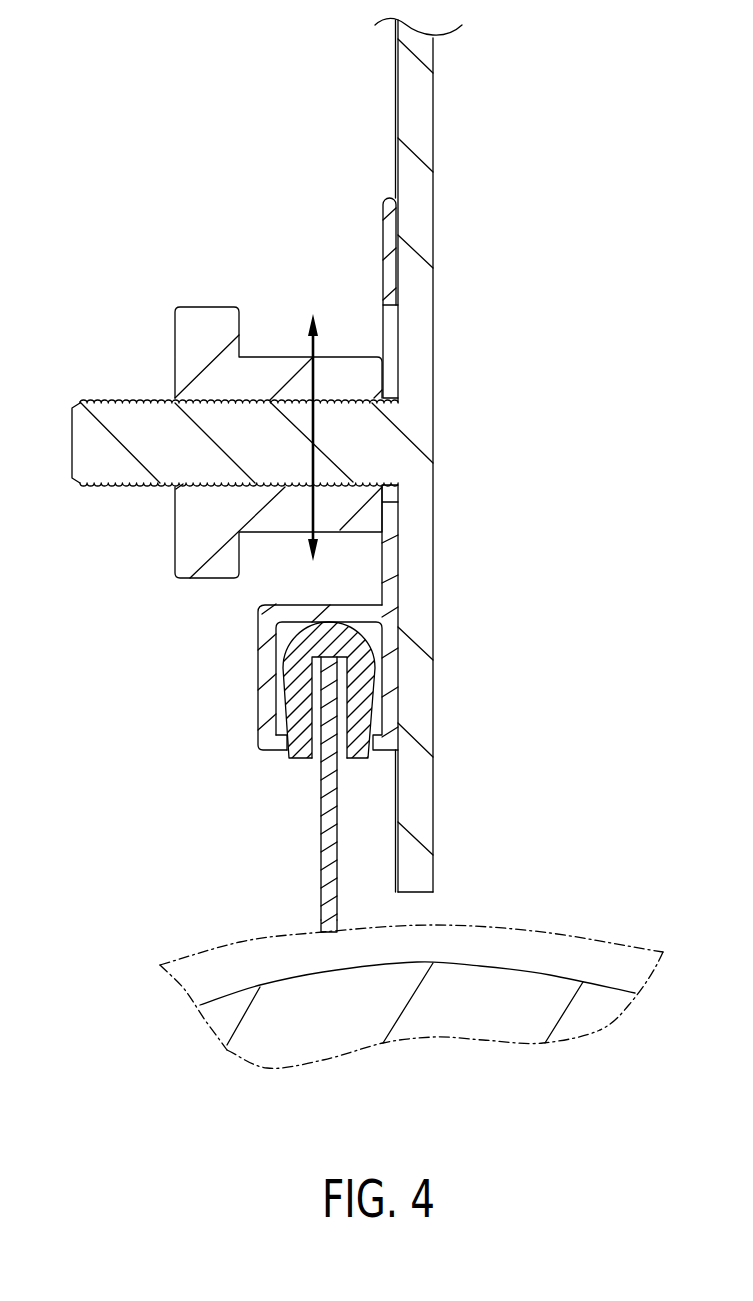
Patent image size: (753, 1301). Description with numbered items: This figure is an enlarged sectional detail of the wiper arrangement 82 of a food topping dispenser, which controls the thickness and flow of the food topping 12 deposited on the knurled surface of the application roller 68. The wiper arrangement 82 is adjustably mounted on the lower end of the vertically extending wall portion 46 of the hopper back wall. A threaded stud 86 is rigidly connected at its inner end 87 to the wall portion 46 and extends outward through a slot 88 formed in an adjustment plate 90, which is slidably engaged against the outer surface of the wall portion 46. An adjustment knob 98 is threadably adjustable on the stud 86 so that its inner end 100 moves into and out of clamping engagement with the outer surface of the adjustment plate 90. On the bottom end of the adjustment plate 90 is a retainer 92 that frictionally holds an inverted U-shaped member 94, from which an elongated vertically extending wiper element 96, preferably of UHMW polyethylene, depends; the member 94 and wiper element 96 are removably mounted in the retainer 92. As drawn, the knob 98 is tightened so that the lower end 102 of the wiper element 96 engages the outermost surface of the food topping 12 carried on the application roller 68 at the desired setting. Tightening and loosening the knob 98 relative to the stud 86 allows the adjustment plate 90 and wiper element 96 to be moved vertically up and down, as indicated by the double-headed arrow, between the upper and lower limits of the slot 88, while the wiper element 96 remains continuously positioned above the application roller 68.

The food topping material 12 is at (527, 957).
The vertically extending wall portion 46 is at (416, 226).
The application roller 68 is at (593, 1010).
The wiper arrangement 82 is at (136, 337).
The threaded stud 86 is at (117, 462).
The inner end 87 is at (390, 449).
The slot 88 is at (391, 308).
The adjustment plate 90 is at (391, 232).
The retainer 92 is at (267, 658).
The inverted U-shaped member 94 is at (302, 694).
The wiper element 96 is at (330, 823).
The adjustment knob 98 is at (200, 330).
The inner end of knob 100 is at (382, 517).
The lower end of wiper element 102 is at (321, 932).